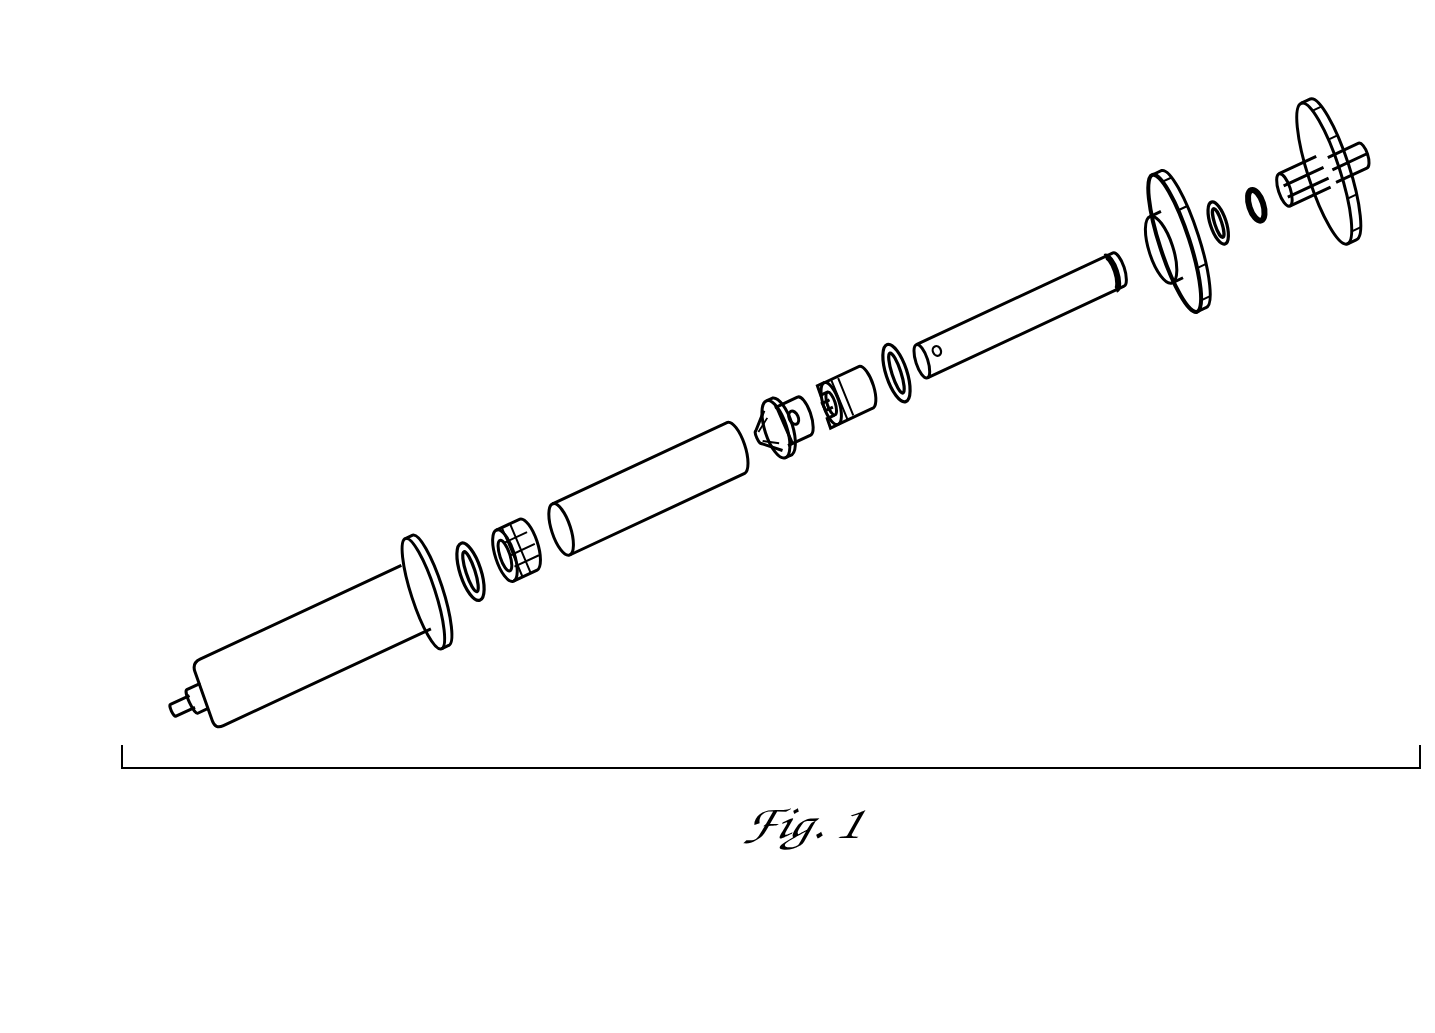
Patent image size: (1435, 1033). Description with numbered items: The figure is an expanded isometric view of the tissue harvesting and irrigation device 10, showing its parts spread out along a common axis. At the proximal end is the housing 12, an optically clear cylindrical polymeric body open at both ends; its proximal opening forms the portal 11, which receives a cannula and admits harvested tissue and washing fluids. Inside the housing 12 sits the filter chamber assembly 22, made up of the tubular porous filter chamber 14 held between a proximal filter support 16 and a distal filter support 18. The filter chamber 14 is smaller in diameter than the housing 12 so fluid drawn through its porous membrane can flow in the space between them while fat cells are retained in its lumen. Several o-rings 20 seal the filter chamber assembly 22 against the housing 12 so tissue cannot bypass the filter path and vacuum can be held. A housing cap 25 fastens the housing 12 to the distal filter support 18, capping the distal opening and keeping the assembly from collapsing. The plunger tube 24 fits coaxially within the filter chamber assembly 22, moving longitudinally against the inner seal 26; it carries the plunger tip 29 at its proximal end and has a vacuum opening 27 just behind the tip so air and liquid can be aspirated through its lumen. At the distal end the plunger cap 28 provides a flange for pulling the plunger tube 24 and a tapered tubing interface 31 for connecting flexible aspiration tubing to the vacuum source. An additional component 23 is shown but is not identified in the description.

The tissue harvesting and irrigation device 10 is at (226, 300).
The portal 11 is at (160, 686).
The housing 12 is at (336, 663).
The filter chamber 14 is at (655, 494).
The proximal filter support 16 is at (541, 581).
The distal filter support 18 is at (866, 417).
The o-rings 20 is at (481, 599).
The filter chamber assembly 22 is at (847, 327).
The end cap 23 is at (1214, 304).
The plunger tube 24 is at (1020, 327).
The housing cap 25 is at (895, 303).
The inner seal 26 is at (1263, 208).
The vacuum opening 27 is at (942, 359).
The plunger cap 28 is at (1362, 240).
The plunger tip 29 is at (797, 443).
The tubing interface 31 is at (1386, 142).